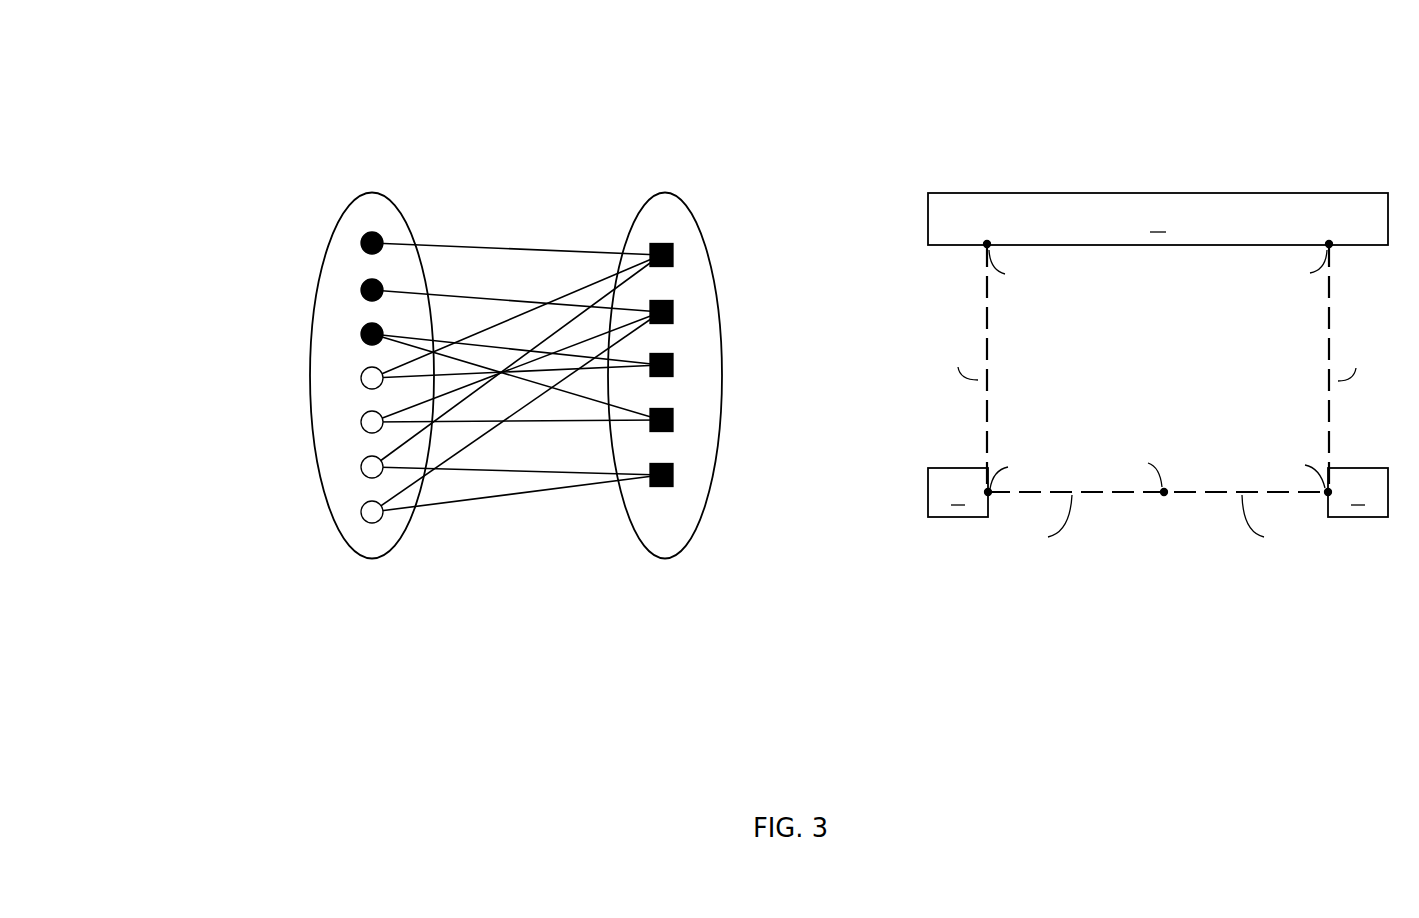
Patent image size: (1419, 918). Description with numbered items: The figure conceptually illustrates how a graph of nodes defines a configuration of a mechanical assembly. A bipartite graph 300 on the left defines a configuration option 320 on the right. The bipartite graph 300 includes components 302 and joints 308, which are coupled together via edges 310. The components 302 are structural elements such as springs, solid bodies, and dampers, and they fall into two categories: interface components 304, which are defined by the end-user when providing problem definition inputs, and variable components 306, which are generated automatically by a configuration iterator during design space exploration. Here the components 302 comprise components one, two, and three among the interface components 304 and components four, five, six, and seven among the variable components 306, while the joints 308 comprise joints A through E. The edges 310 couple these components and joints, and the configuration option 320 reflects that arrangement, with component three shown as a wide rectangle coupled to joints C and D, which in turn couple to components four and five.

The bipartite graph 300 is at (216, 58).
The components 302 is at (385, 196).
The interface components 304 is at (248, 355).
The variable components 306 is at (248, 523).
The joints 308 is at (672, 196).
The edges 310 is at (480, 584).
The configuration option 320 is at (1345, 52).